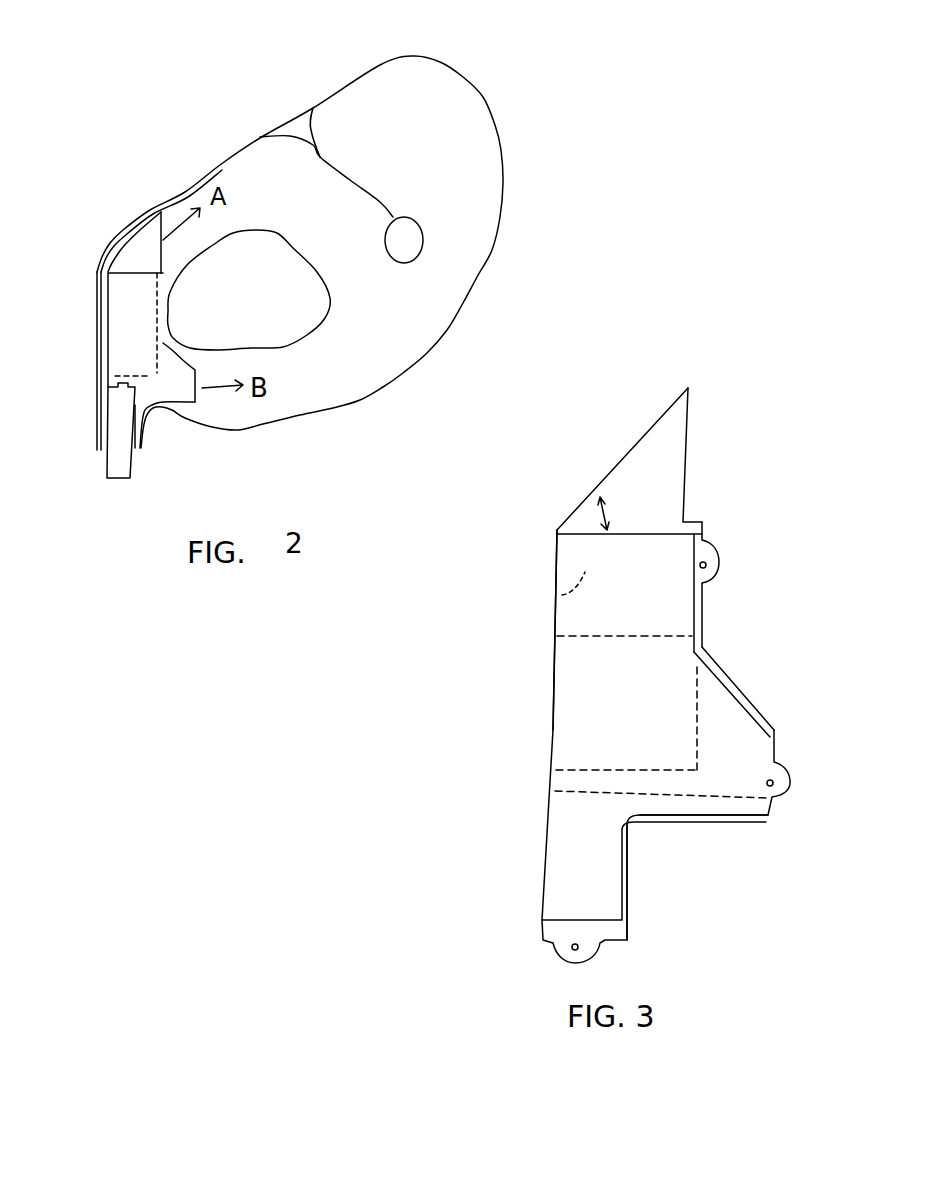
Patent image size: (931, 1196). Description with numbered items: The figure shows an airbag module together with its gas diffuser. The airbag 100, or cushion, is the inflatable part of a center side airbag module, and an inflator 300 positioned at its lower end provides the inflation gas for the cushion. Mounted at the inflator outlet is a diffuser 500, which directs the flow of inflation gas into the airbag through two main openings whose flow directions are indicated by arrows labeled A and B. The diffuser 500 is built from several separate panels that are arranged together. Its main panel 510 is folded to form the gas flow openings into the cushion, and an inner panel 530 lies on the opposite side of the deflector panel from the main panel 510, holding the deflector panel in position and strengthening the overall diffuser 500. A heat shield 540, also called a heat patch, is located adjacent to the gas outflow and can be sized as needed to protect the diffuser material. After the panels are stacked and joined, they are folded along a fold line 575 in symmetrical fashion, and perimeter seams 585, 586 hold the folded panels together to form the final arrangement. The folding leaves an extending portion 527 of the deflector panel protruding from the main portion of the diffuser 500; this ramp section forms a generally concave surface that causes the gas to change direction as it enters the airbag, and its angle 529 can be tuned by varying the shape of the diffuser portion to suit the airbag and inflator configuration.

In FIG. 2, the airbag 100 is at (262, 128).
In FIG. 2, the inflator 300 is at (120, 458).
In FIG. 2, the diffuser 500 is at (123, 293).
In FIG. 3, the diffuser 500 is at (497, 672).
In FIG. 3, the main panel 510 is at (732, 715).
In FIG. 3, the extending portion 527 is at (663, 472).
In FIG. 3, the angle 529 is at (622, 500).
In FIG. 3, the inner panel 530 is at (548, 595).
In FIG. 3, the heat shield 540 is at (742, 753).
In FIG. 3, the fold line 575 is at (552, 742).
In FIG. 3, the perimeter seam 585 is at (640, 823).
In FIG. 3, the perimeter seam 586 is at (700, 617).